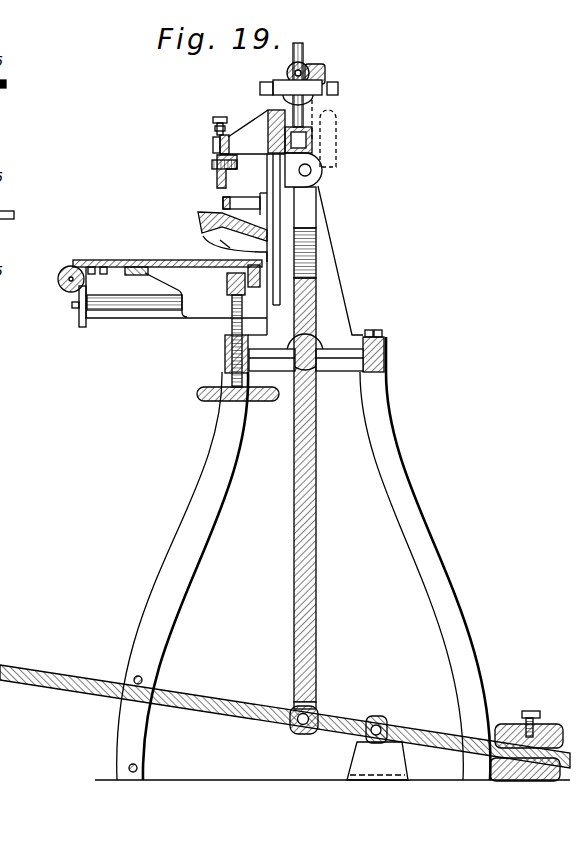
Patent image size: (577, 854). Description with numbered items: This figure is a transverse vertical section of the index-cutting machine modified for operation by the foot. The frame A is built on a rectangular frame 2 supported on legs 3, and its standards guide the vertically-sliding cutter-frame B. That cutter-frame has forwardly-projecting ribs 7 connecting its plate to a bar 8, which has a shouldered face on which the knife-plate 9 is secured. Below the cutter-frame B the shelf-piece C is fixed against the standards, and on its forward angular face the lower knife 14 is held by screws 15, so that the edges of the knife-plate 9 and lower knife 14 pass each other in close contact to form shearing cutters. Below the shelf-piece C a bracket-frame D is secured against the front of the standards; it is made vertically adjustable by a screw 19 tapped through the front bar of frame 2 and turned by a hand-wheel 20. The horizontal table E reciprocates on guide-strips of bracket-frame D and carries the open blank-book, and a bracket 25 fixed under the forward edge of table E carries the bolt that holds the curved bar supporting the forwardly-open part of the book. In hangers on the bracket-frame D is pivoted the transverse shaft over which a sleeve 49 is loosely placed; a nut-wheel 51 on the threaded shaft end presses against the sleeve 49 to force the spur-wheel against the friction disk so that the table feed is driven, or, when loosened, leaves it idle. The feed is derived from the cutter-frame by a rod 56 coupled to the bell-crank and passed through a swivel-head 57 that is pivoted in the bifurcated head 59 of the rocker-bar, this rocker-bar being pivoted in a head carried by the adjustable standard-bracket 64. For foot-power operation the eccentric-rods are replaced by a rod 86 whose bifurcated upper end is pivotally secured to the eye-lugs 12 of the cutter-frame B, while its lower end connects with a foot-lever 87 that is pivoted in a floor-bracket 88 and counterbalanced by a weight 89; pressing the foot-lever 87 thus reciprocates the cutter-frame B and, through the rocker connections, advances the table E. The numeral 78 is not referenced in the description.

The rectangular frame 2 is at (363, 372).
The legs 3 is at (304, 558).
The forwardly-projecting ribs 7 is at (254, 214).
The bar 8 is at (212, 146).
The knife-plate 9 is at (215, 178).
The eye-lugs 12 is at (322, 172).
The lower knife 14 is at (200, 219).
The screws 15 is at (212, 238).
The screw 19 is at (225, 358).
The hand-wheel 20 is at (200, 396).
The bracket 25 is at (62, 291).
The sleeve 49 is at (134, 315).
The nut-wheel 51 is at (81, 316).
The rod 56 is at (306, 104).
The swivel-head 57 is at (326, 112).
The bifurcated head 59 is at (285, 90).
The standard-bracket 64 is at (310, 68).
The slide block 78 is at (223, 202).
The rod 86 is at (320, 295).
The foot-lever 87 is at (240, 706).
The floor-bracket 88 is at (362, 744).
The weight 89 is at (528, 746).
The frame A is at (351, 279).
The cutter-frame B is at (185, 222).
The shelf-piece C is at (217, 250).
The bracket-frame D is at (148, 292).
The table E is at (167, 257).